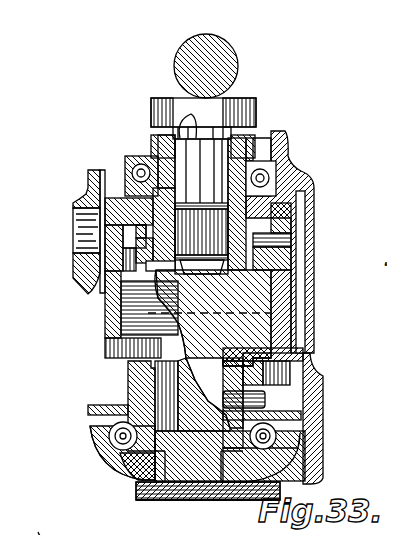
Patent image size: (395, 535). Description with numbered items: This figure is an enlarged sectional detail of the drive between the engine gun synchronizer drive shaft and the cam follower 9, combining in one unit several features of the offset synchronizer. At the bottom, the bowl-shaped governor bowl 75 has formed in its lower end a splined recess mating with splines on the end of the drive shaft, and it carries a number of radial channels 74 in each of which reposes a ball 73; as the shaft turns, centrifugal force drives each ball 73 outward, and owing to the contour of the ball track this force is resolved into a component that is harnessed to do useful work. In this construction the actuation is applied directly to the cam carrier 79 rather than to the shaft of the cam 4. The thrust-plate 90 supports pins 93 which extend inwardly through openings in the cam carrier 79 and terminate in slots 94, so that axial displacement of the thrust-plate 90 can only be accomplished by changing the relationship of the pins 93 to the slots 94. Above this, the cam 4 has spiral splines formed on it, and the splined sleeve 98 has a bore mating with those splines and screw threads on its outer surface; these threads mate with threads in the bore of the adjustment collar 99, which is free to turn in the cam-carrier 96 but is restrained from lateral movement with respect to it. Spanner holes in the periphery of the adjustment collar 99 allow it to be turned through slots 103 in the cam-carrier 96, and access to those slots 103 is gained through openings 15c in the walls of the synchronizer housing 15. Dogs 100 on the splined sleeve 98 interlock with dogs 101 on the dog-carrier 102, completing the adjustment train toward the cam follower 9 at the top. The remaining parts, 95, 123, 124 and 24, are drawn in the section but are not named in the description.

The cam follower 9 is at (229, 52).
The cam 4 is at (248, 106).
The flange 95 is at (183, 112).
The splined sleeve 98 is at (110, 185).
The cam-carrier 96 is at (278, 136).
The synchronizer housing 15 is at (306, 192).
The slots 103 is at (283, 222).
The washer 123 is at (283, 238).
The dogs 100 is at (297, 258).
The dogs 101 is at (290, 285).
The adjustment collar 99 is at (92, 200).
The openings 15c is at (65, 233).
The dog-carrier 102 is at (80, 272).
The slots 94 is at (170, 292).
The cam carrier 79 is at (298, 340).
The thrust-plate 90 is at (130, 380).
The ball 73 is at (115, 397).
The radial channels 74 is at (100, 426).
The governor bowl 75 is at (105, 452).
The wedge 124 is at (120, 466).
The pins 93 is at (257, 390).
The base 24 is at (71, 515).